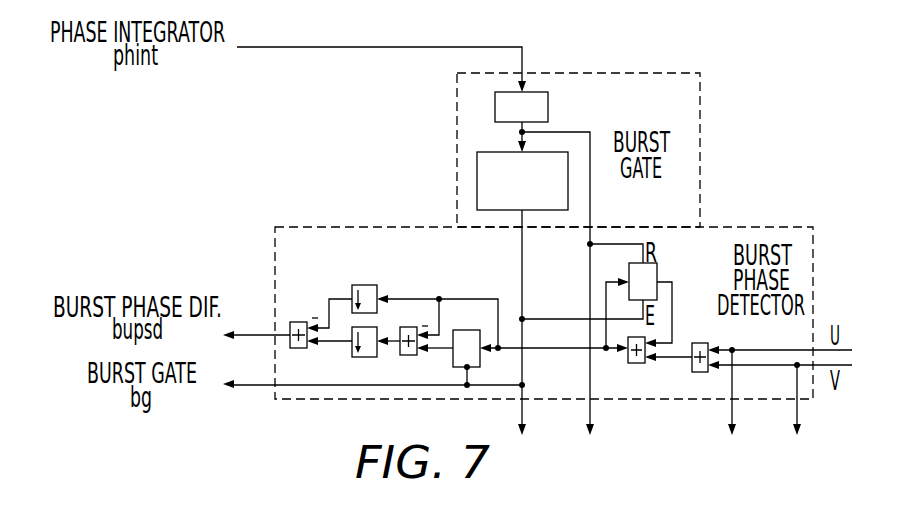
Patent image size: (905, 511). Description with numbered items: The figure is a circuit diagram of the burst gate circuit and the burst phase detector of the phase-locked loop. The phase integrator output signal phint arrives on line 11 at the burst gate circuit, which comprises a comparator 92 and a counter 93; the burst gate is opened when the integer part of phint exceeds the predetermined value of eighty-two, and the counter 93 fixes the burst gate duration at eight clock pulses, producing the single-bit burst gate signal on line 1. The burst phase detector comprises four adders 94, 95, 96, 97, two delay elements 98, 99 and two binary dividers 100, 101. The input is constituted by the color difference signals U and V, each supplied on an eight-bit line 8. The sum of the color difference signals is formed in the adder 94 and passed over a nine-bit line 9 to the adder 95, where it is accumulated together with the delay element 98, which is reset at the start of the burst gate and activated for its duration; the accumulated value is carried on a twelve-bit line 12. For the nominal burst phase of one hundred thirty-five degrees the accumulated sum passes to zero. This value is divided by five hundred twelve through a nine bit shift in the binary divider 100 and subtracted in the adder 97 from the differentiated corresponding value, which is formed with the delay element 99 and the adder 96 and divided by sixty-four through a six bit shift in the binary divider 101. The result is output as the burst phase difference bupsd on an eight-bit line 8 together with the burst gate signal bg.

The phase integrator output line (phint) 11 is at (348, 57).
The comparator 92 is at (548, 107).
The counter 93 is at (493, 150).
The 1-bit burst gate line 1 is at (583, 195).
The delay element 98 is at (657, 273).
The 12-bit data line 12 is at (565, 341).
The adder 95 is at (637, 363).
The 9-bit data line 9 is at (672, 350).
The adder 94 is at (700, 372).
The 8-bit data line 8 is at (765, 340).
The delay element 99 is at (458, 330).
The adder 96 is at (408, 355).
The binary divider 100 is at (367, 284).
The binary divider 101 is at (360, 357).
The adder 97 is at (297, 322).